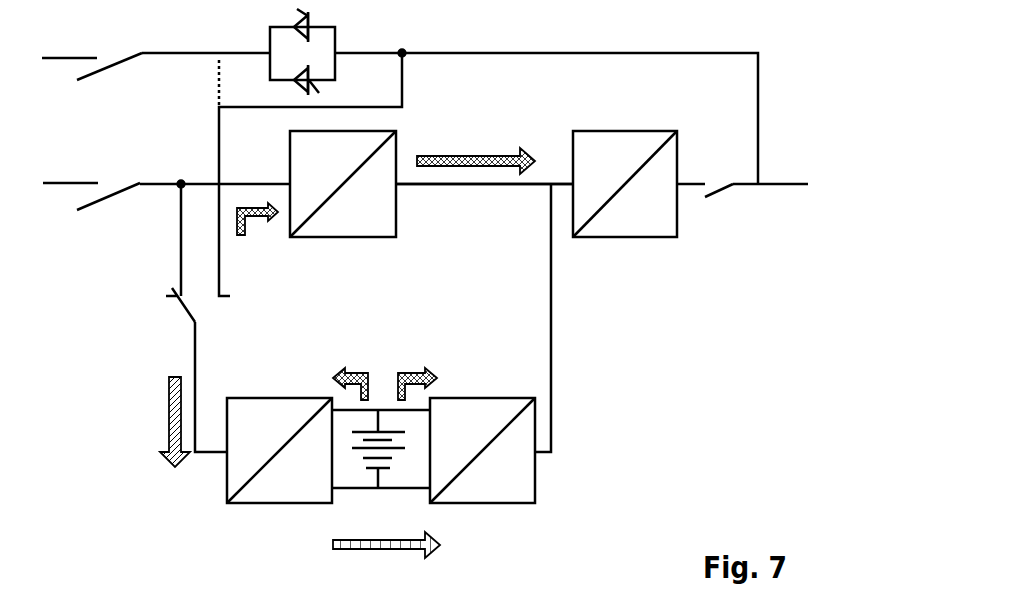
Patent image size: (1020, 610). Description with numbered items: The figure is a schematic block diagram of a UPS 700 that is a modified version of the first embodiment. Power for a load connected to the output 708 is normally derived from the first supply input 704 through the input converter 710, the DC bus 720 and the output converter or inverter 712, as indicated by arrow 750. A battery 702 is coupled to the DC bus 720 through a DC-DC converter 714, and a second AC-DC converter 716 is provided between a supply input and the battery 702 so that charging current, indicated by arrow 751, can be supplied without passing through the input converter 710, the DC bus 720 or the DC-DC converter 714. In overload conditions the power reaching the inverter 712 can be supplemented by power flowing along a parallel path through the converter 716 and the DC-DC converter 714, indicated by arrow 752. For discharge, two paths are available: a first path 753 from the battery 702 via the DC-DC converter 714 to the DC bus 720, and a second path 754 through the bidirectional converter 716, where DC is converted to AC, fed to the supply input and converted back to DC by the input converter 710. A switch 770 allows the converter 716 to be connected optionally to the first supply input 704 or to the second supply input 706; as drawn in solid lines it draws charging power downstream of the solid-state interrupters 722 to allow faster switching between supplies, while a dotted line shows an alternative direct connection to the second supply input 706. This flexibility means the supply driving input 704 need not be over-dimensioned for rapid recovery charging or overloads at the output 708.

The UPS 700 is at (630, 413).
The battery 702 is at (373, 466).
The first supply input 704 is at (160, 185).
The second supply input 706 is at (181, 54).
The output 708 is at (768, 183).
The input converter 710 is at (372, 237).
The output converter (inverter) 712 is at (655, 238).
The DC-DC converter 714 is at (458, 398).
The second AC-DC converter 716 is at (227, 485).
The DC bus 720 is at (413, 185).
The solid-state interrupters 722 is at (335, 45).
The normal power flow 750 is at (520, 150).
The charging current flow 751 is at (170, 418).
The supplementary power flow 752 is at (350, 552).
The first discharge path 753 is at (403, 375).
The second discharge path 754 is at (245, 233).
The switch 770 is at (195, 318).